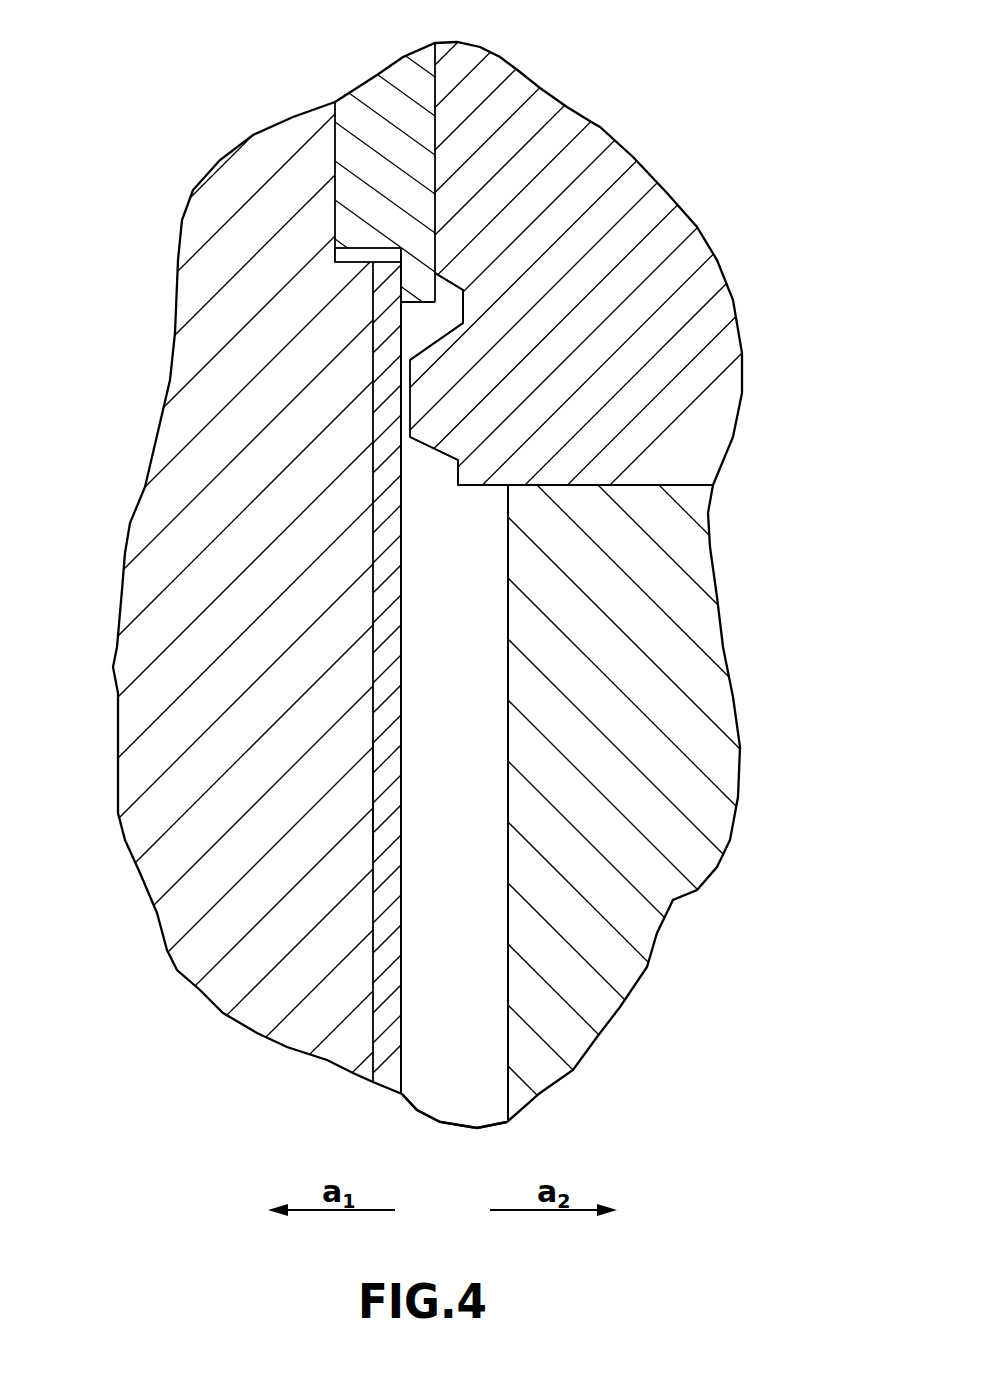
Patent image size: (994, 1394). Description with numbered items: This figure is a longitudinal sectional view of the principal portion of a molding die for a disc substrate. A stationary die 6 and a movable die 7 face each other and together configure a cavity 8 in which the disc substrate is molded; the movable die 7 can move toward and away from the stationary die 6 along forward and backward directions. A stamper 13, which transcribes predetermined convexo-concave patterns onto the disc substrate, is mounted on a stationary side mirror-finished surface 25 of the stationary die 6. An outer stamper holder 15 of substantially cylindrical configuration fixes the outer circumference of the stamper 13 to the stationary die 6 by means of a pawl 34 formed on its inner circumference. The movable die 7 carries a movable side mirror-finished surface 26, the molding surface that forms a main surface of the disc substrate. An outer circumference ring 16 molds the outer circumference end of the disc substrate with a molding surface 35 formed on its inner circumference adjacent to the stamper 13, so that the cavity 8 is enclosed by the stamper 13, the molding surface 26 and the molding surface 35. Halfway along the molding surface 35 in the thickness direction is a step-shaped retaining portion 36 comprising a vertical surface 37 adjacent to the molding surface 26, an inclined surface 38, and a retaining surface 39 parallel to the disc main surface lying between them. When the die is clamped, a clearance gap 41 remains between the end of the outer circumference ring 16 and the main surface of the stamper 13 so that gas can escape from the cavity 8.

The stationary die 6 is at (142, 800).
The movable die 7 is at (680, 680).
The cavity 8 is at (474, 976).
The stamper 13 is at (393, 1010).
The outer stamper holder 15 is at (377, 103).
The outer circumference ring 16 is at (705, 350).
The stationary side mirror-finished surface 25 is at (373, 811).
The movable side mirror-finished surface 26 is at (505, 827).
The pawl 34 is at (428, 305).
The molding surface 35 is at (478, 487).
The retaining portion 36 is at (432, 514).
The vertical surface 37 is at (498, 487).
The inclined surface 38 is at (452, 459).
The retaining surface 39 is at (455, 479).
The clearance gap 41 is at (424, 337).